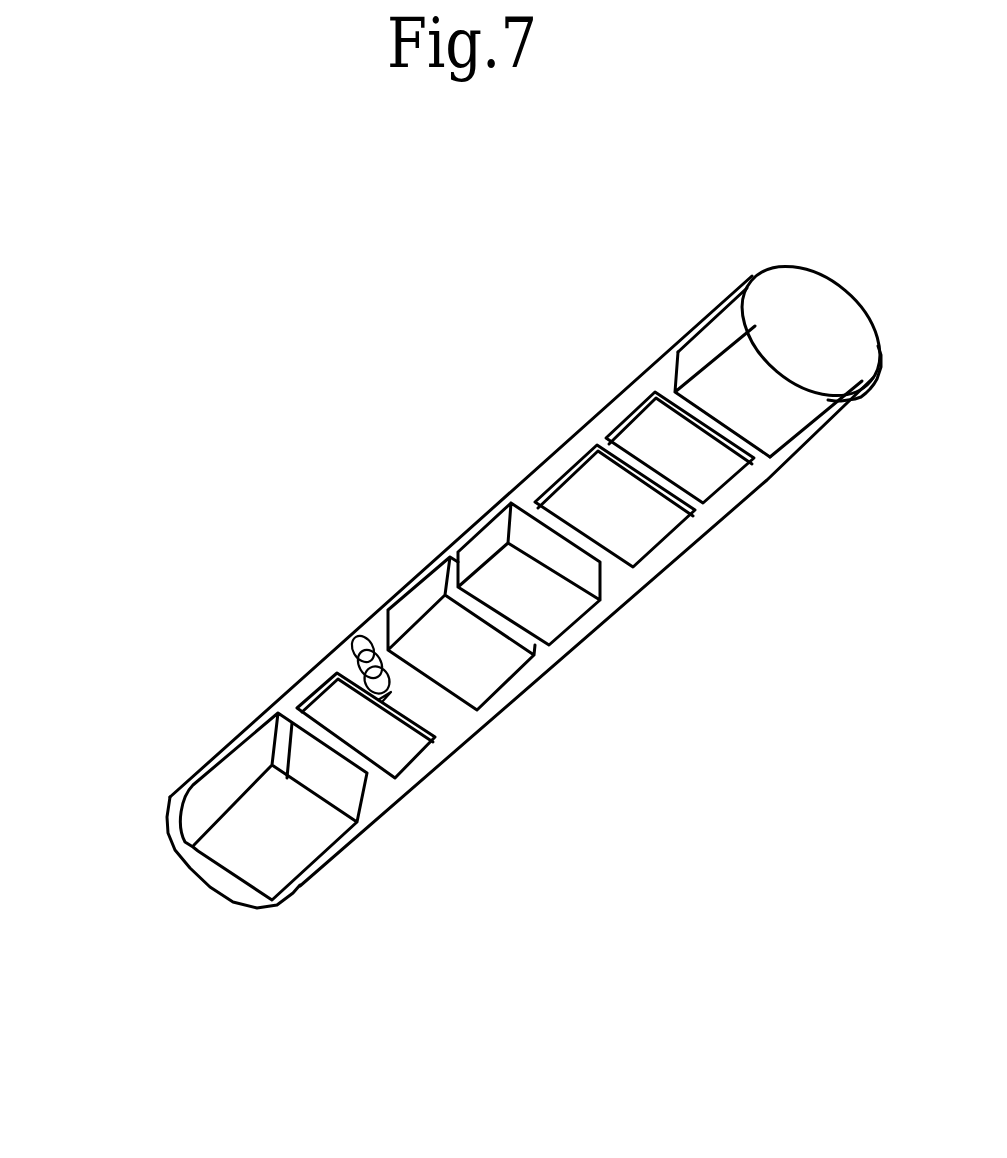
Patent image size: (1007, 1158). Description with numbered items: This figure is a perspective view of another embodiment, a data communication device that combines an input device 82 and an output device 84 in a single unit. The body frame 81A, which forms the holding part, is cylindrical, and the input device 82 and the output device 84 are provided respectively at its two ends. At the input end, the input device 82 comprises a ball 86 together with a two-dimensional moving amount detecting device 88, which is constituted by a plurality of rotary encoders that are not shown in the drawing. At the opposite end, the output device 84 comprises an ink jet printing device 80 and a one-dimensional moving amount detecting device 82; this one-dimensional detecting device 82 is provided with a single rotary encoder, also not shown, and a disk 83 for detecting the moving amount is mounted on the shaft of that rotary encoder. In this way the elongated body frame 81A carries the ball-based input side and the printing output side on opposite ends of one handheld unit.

The ink jet printing device 80 is at (247, 865).
The body frame 81A is at (578, 436).
The input device 82 is at (700, 292).
The disk 83 is at (203, 804).
The output device 84 is at (703, 468).
The ball 86 is at (797, 311).
The two-dimensional moving amount detecting device 88 is at (700, 357).